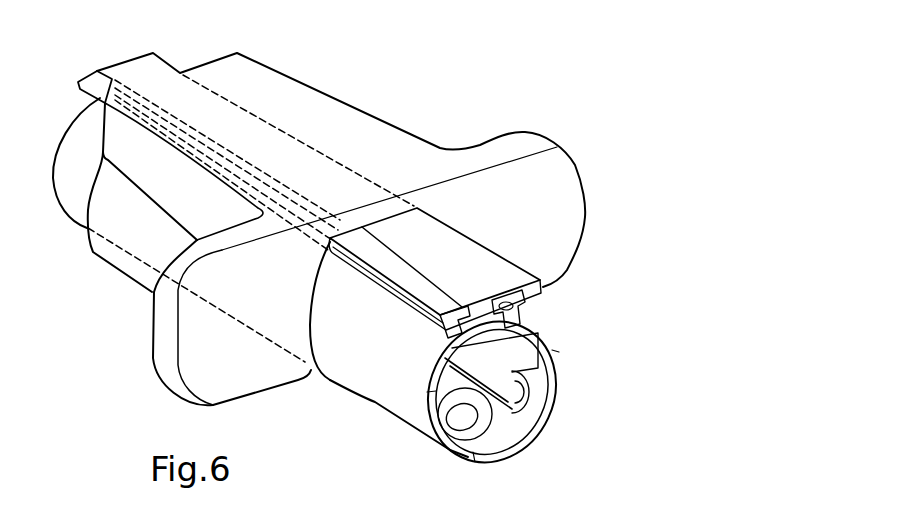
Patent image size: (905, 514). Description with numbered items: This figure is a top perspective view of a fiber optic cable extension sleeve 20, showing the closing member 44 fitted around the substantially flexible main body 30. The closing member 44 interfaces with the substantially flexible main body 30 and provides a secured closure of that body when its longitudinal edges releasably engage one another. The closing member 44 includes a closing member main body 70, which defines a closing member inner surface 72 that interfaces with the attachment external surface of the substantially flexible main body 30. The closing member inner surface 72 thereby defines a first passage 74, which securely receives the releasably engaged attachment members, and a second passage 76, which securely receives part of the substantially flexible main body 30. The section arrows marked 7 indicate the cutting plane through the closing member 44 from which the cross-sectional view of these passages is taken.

The awning assembly 20 is at (672, 223).
The substantially flexible main body 30 is at (552, 346).
The closing member 44 is at (546, 107).
The closing member main body 70 is at (237, 340).
The closing member inner surface 72 is at (312, 297).
The first passage 74 is at (420, 231).
The second passage 76 is at (352, 316).
The section line 7- 7 is at (565, 167).